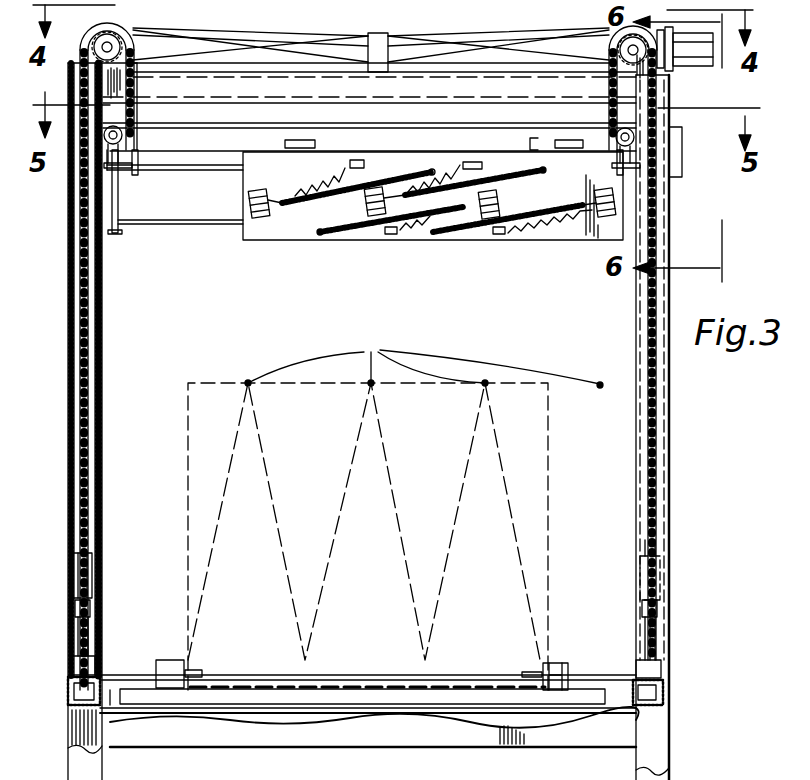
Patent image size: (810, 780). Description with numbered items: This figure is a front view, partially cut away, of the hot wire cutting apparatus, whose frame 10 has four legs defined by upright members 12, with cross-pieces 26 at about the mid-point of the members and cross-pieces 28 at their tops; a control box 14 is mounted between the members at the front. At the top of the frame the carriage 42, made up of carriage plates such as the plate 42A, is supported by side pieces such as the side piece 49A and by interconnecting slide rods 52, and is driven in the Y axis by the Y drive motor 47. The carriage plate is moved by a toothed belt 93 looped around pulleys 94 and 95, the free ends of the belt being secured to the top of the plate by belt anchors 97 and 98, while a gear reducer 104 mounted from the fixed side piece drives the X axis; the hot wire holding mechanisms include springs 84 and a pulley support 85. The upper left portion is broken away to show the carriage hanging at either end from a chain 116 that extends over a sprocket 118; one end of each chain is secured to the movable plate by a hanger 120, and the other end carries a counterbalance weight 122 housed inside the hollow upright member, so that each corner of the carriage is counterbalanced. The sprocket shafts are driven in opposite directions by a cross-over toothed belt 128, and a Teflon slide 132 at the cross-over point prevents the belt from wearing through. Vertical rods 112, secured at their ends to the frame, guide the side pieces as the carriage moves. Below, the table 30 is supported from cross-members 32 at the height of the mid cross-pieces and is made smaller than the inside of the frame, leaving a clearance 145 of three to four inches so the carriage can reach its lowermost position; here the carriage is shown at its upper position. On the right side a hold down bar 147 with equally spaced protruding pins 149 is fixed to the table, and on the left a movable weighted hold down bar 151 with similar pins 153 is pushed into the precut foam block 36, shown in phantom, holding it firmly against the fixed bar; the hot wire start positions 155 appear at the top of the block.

The frame 10 is at (60, 290).
The upright members 12 is at (67, 378).
The control box 14 is at (532, 748).
The cross-pieces 26 is at (68, 695).
The cross-pieces 28 is at (422, 85).
The table 30 is at (405, 705).
The cross-members 32 is at (310, 708).
The foam block 36 is at (175, 414).
The carriage 42 is at (425, 228).
The carriage plate 42A is at (302, 232).
The Y drive motor 47 is at (690, 64).
The side piece 49A is at (120, 238).
The interconnecting rods 52 is at (188, 168).
The spring 84 is at (386, 244).
The pulley support 85 is at (257, 218).
The tooth belt 93 is at (487, 122).
The pulley 94 is at (106, 137).
The pulley 95 is at (636, 137).
The belt anchor 97 is at (290, 138).
The belt anchor 98 is at (552, 137).
The gear reducer 104 is at (682, 160).
The vertical rods 112 is at (78, 640).
The chain 116 is at (84, 60).
The sprocket 118 is at (128, 40).
The hanger 120 is at (137, 175).
The counterbalance weight 122 is at (80, 575).
The toothed belt 128 is at (306, 40).
The Teflon slide 132 is at (382, 34).
The clearance 145 is at (112, 694).
The hold down bar 147 is at (560, 664).
The pins 149 is at (528, 672).
The weighted hold down bar 151 is at (168, 660).
The pins 153 is at (200, 671).
The hot wire start positions 155 is at (395, 495).